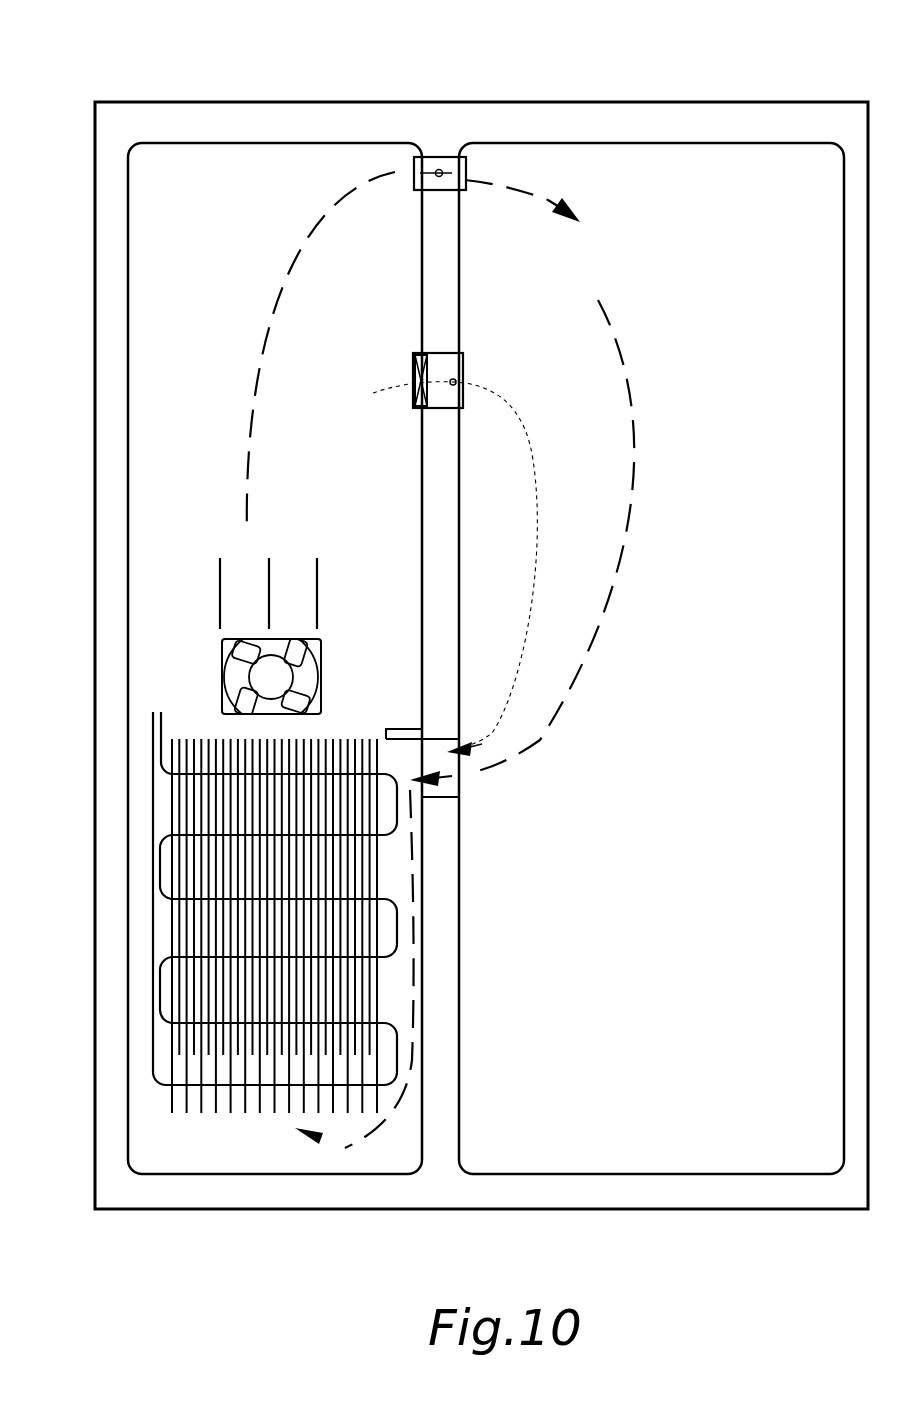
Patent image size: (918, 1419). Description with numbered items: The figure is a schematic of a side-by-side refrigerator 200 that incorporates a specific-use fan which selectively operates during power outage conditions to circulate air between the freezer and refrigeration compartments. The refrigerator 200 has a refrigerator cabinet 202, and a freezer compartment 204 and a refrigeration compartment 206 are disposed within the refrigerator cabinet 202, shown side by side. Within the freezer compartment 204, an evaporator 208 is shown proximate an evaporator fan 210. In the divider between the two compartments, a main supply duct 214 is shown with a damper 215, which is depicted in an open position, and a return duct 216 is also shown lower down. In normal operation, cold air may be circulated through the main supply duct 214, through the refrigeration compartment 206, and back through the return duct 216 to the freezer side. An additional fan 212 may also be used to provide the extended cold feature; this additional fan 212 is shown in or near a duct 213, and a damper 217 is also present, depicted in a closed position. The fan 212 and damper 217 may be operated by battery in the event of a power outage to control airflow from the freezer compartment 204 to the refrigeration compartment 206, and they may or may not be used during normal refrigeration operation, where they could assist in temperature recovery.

The refrigerator 200 is at (650, 44).
The refrigerator cabinet 202 is at (768, 102).
The freezer compartment 204 is at (193, 163).
The refrigeration compartment 206 is at (633, 165).
The evaporator 208 is at (165, 797).
The evaporator fan 210 is at (318, 655).
The additional fan 212 is at (413, 360).
The duct 213 is at (438, 397).
The main supply duct 214 is at (431, 163).
The damper 215 is at (443, 178).
The return duct 216 is at (455, 787).
The damper 217 is at (463, 360).